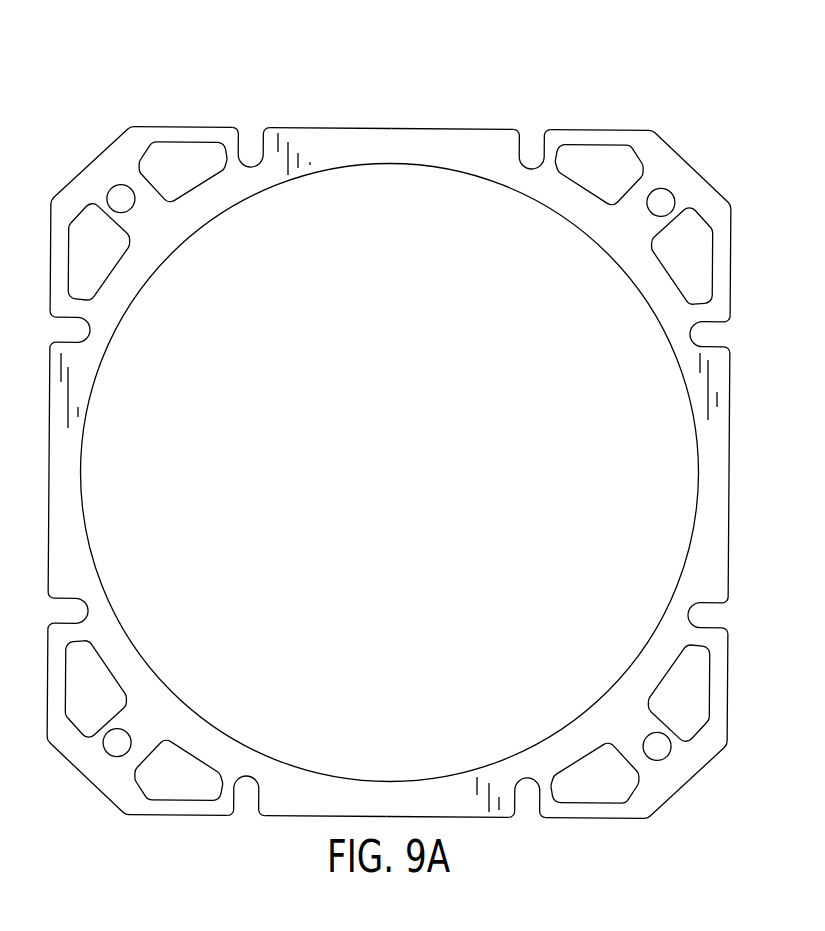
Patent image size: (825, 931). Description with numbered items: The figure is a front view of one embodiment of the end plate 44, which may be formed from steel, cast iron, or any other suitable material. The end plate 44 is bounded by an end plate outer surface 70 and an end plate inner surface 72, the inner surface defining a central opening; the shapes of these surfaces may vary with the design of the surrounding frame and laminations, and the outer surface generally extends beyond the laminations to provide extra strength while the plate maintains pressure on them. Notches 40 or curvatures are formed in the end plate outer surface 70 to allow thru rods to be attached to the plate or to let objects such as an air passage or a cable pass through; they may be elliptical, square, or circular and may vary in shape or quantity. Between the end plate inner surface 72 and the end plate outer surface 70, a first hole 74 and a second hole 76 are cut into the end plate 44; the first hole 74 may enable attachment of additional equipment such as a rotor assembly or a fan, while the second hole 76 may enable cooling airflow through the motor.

The end plate 44 is at (496, 74).
The notches 40 is at (250, 157).
The end plate outer surface 70 is at (732, 415).
The end plate inner surface 72 is at (692, 498).
The first hole 74 is at (660, 750).
The second hole 76 is at (690, 693).